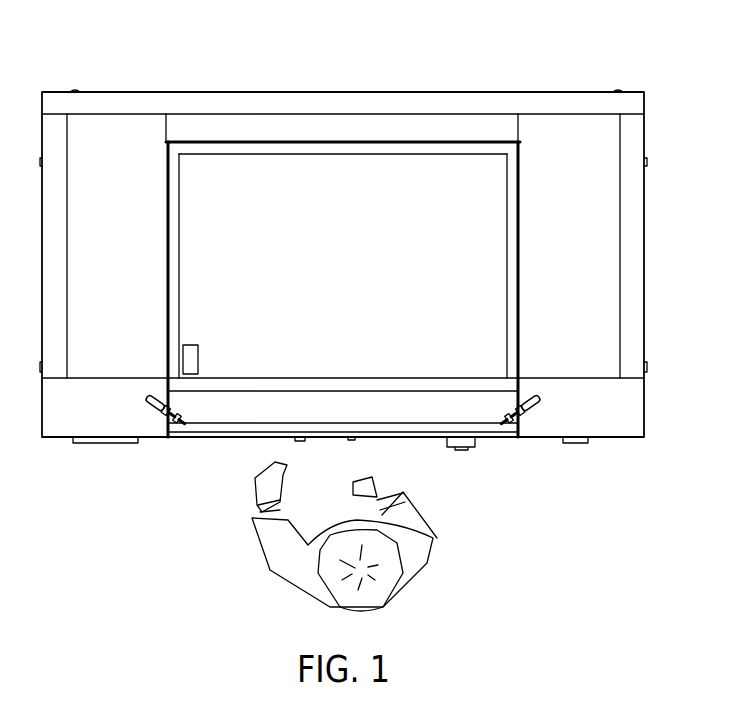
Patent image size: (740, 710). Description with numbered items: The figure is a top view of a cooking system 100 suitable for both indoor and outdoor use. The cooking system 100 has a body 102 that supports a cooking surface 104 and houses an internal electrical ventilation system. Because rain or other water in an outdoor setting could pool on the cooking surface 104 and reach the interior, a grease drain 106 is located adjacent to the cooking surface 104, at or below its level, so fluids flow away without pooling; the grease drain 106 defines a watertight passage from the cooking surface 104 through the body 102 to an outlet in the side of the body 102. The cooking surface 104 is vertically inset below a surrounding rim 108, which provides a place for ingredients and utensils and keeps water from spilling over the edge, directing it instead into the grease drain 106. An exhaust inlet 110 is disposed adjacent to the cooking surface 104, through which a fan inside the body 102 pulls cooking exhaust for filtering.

The cooking system 100 is at (583, 32).
The body 102 is at (670, 92).
The cooking surface 104 is at (359, 278).
The grease drain 106 is at (196, 344).
The rim 108 is at (232, 142).
The exhaust inlet 110 is at (165, 407).